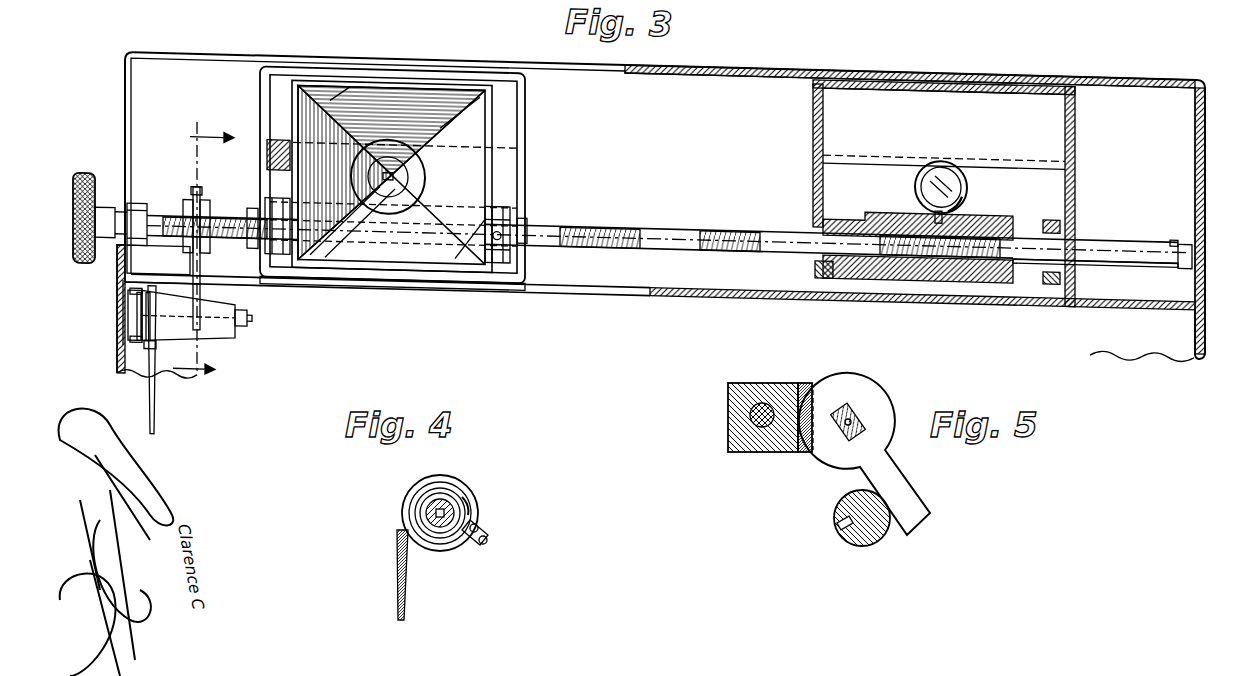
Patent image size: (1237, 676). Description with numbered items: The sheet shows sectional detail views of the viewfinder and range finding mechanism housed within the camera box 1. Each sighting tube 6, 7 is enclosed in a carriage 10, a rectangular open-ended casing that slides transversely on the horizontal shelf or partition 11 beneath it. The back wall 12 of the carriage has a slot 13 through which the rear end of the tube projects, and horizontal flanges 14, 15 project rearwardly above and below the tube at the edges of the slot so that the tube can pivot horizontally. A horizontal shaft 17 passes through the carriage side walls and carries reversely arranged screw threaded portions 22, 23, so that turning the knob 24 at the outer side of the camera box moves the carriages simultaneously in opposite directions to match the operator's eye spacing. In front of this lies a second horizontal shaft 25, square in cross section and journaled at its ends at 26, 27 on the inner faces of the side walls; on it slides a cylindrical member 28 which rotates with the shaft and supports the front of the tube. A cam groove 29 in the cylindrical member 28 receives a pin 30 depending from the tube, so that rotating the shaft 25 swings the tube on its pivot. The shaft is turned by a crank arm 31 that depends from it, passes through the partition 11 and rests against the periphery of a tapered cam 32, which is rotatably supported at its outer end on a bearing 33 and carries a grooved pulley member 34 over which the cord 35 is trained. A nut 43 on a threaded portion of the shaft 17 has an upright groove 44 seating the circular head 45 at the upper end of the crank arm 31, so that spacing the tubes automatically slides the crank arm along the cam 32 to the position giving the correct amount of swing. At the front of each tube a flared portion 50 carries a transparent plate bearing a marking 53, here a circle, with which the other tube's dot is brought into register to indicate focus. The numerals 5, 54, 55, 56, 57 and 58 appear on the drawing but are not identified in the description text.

In FIG. 3, the camera box 1 is at (802, 52).
In FIG. 3, the section line 5- 5 is at (203, 250).
In FIG. 3, the sighting tube 6 is at (958, 153).
In FIG. 3, the sighting tube 7 is at (428, 162).
In FIG. 3, the carriage 10 is at (518, 152).
In FIG. 3, the horizontal shelf or partition 11 is at (713, 283).
In FIG. 3, the back wall 12 is at (500, 105).
In FIG. 3, the slot or opening 13 is at (500, 163).
In FIG. 3, the horizontal flange 14 is at (813, 151).
In FIG. 3, the horizontal flange 15 is at (500, 187).
In FIG. 3, the horizontal shaft 17 is at (615, 214).
In FIG. 5, the horizontal shaft 17 is at (762, 450).
In FIG. 3, the screw threaded portion 22 is at (793, 240).
In FIG. 3, the screw threaded portion 23 is at (240, 240).
In FIG. 3, the knob 24 is at (97, 204).
In FIG. 3, the horizontal shaft 25 is at (687, 222).
In FIG. 5, the horizontal shaft 25 is at (843, 440).
In FIG. 3, the journal 26 is at (1185, 215).
In FIG. 3, the journal 27 is at (128, 188).
In FIG. 3, the cylindrical member 28 is at (373, 273).
In FIG. 3, the cam groove 29 is at (960, 198).
In FIG. 3, the pin or projection 30 is at (962, 180).
In FIG. 3, the crank arm 31 is at (167, 290).
In FIG. 5, the crank arm 31 is at (912, 505).
In FIG. 3, the cam 32 is at (215, 335).
In FIG. 4, the cam 32 is at (410, 490).
In FIG. 5, the cam 32 is at (865, 548).
In FIG. 3, the bearing 33 is at (132, 318).
In FIG. 4, the bearing 33 is at (447, 530).
In FIG. 3, the grooved pulley member 34 is at (140, 352).
In FIG. 4, the grooved pulley member 34 is at (480, 500).
In FIG. 3, the cord 35 is at (156, 413).
In FIG. 4, the cord 35 is at (400, 592).
In FIG. 3, the nut 43 is at (185, 201).
In FIG. 5, the nut 43 is at (755, 385).
In FIG. 3, the upright groove 44 is at (203, 195).
In FIG. 5, the upright groove 44 is at (812, 384).
In FIG. 3, the head 45 is at (197, 185).
In FIG. 5, the head 45 is at (878, 398).
In FIG. 3, the flared portion 50 is at (478, 259).
In FIG. 3, the marking 53 is at (405, 140).
In FIG. 3, the ring 54 is at (138, 351).
In FIG. 4, the ring 54 is at (450, 480).
In FIG. 4, the pin 55 is at (477, 524).
In FIG. 4, the ring 56 is at (468, 490).
In FIG. 3, the lever 57 is at (125, 281).
In FIG. 4, the lever 57 is at (503, 560).
In FIG. 3, the pivot 58 is at (128, 331).
In FIG. 4, the pivot 58 is at (483, 545).